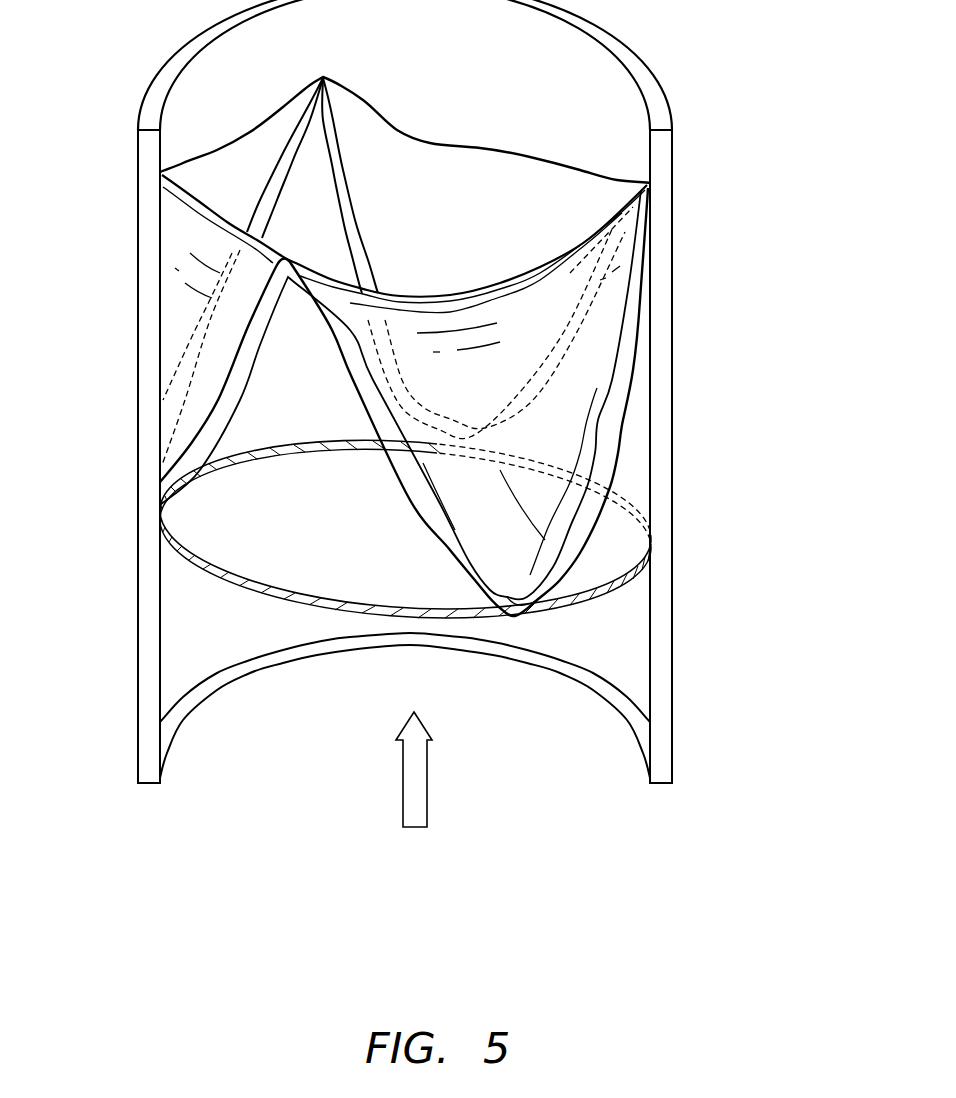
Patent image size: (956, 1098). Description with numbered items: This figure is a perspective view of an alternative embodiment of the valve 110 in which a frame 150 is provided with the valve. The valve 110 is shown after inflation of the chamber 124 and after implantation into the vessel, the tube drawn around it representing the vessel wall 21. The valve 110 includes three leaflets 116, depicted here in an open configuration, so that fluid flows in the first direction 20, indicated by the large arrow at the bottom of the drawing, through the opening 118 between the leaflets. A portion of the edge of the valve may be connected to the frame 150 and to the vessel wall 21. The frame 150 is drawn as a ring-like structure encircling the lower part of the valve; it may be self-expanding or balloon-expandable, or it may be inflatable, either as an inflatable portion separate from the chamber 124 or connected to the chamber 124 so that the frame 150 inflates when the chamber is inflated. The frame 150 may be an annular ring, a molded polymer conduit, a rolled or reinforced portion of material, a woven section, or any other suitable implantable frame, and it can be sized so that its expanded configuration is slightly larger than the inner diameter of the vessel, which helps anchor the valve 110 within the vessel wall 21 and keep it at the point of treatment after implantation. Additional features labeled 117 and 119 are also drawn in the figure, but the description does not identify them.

The valve 110 is at (712, 133).
The vessel wall 21 is at (662, 160).
The leaflets 116 is at (558, 287).
The filter element 117 is at (540, 528).
The opening 118 is at (495, 203).
The rim 119 is at (224, 222).
The chamber 124 is at (573, 558).
The frame 150 is at (247, 573).
The first direction 20 is at (427, 777).